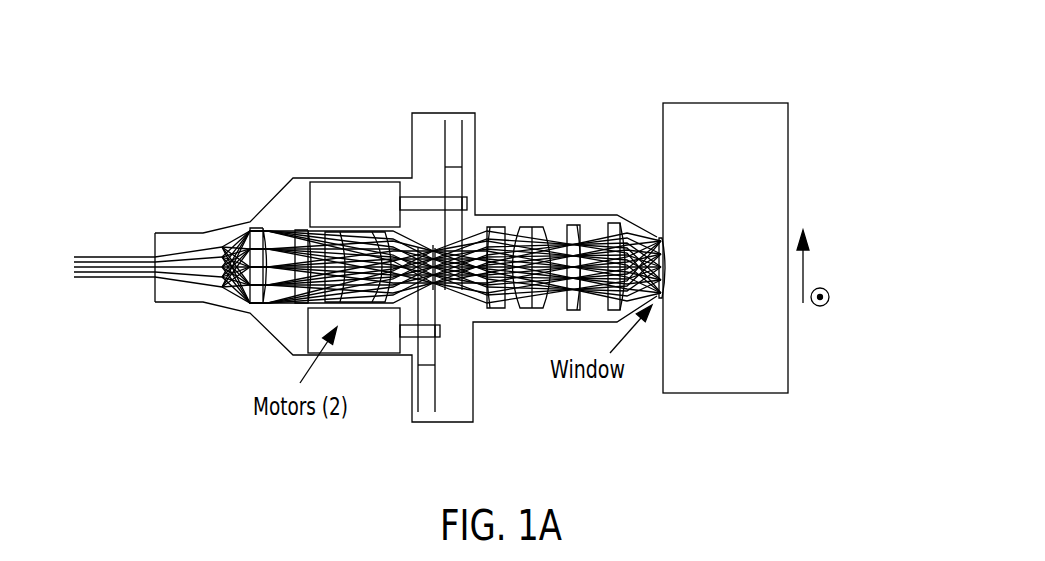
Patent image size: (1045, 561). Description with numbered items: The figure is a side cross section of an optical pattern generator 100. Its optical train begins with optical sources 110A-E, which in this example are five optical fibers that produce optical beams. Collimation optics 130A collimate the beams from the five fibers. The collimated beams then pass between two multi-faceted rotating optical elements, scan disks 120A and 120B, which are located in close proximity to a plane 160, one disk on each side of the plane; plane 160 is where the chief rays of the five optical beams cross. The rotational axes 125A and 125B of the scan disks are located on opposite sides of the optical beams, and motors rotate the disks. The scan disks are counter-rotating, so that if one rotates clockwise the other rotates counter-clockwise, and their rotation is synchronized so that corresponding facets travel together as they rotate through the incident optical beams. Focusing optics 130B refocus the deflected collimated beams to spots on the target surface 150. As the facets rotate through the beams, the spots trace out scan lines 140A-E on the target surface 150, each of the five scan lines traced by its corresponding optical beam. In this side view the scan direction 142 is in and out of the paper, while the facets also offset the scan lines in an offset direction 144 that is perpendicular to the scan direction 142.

The optical pattern generator 100 is at (145, 28).
The optical sources 110A-E is at (196, 224).
The scan disk 120A is at (449, 108).
The scan disk 120B is at (427, 412).
The rotational axis 125A is at (467, 203).
The rotational axis 125B is at (440, 332).
The collimation optics 130A is at (385, 165).
The focusing optics 130B is at (633, 182).
The scan lines 140A-E is at (663, 220).
The scan direction 142 is at (859, 332).
The offset direction 144 is at (843, 237).
The target surface 150 is at (654, 321).
The plane 160 is at (440, 292).